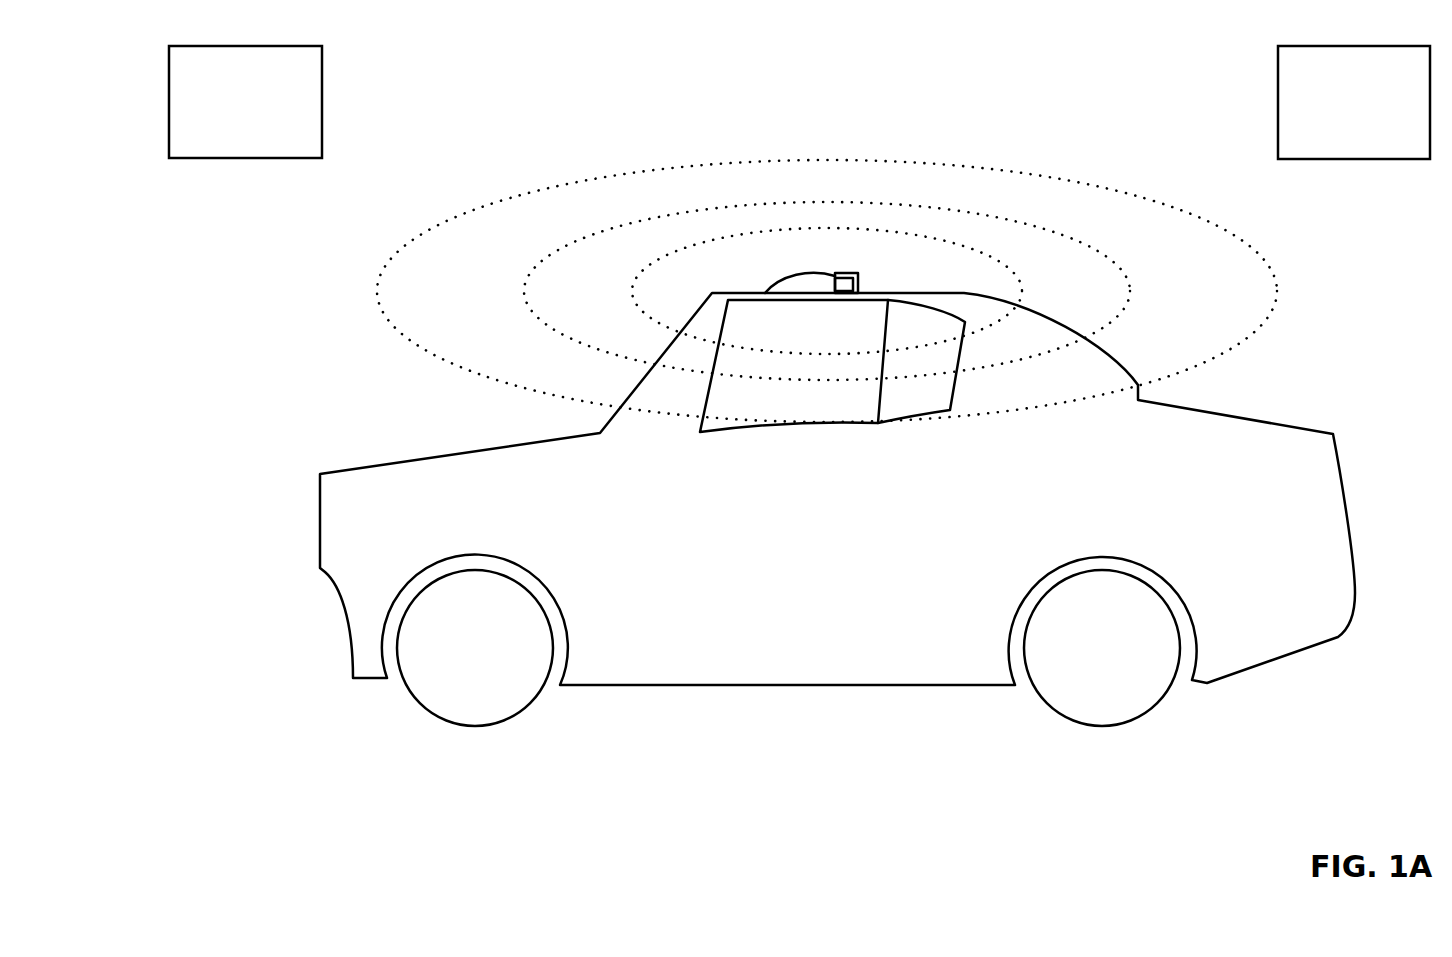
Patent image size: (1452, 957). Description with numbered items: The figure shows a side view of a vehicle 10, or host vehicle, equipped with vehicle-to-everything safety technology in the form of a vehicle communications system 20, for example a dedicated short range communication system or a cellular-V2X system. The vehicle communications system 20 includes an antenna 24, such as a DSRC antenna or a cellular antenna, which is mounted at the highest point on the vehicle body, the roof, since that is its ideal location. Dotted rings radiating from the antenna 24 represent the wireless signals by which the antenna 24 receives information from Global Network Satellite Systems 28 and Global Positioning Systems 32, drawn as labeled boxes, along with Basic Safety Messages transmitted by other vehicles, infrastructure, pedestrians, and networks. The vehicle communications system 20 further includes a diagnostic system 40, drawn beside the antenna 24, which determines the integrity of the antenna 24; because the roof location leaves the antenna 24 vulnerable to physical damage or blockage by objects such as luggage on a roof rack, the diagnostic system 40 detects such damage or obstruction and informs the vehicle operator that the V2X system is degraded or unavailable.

The vehicle 10 is at (462, 452).
The vehicle communications system 20 is at (768, 285).
The antenna 24 is at (813, 285).
The diagnostic system 40 is at (858, 288).
The Global Network Satellite Systems 28 is at (168, 102).
The Global Positioning Systems 32 is at (1278, 102).